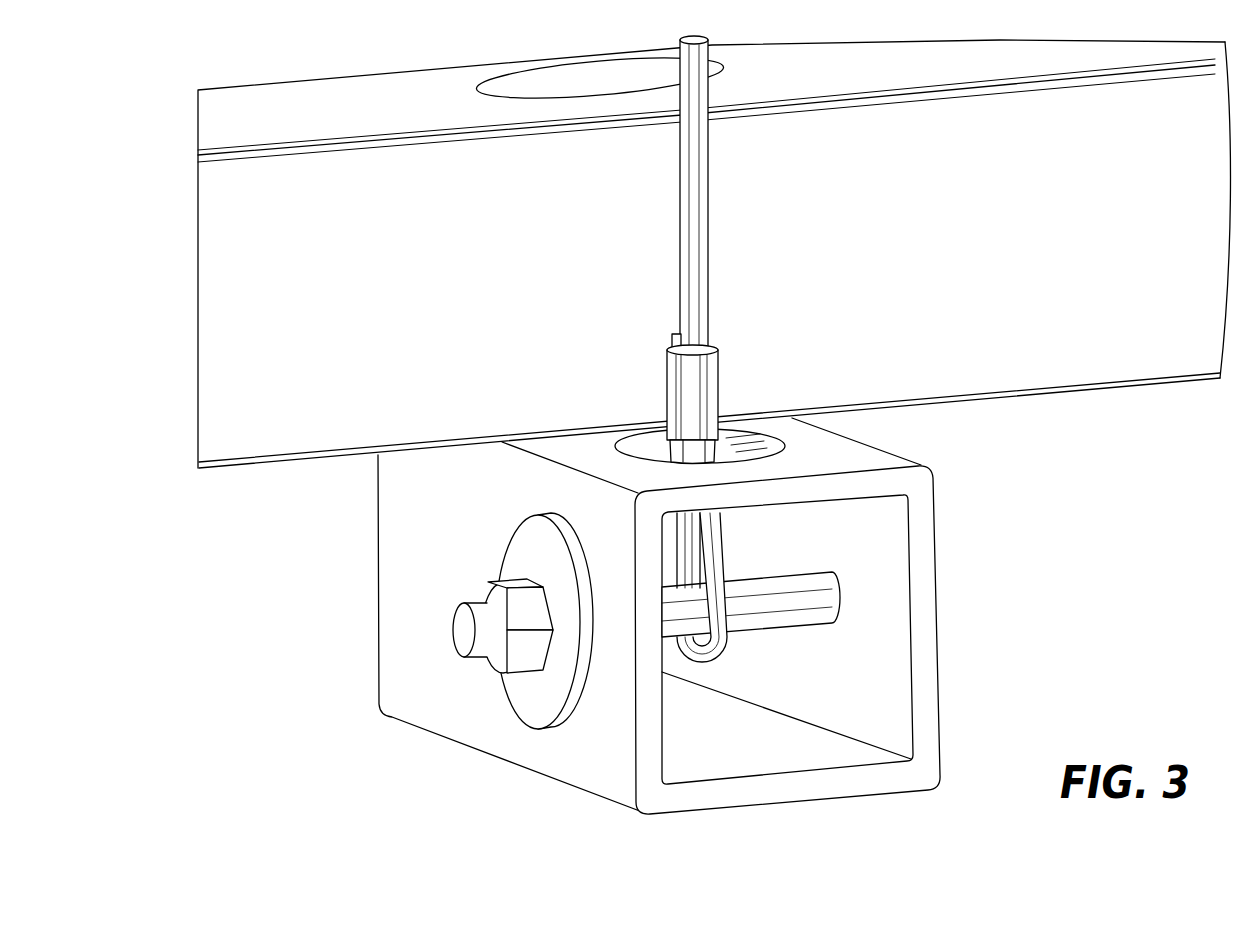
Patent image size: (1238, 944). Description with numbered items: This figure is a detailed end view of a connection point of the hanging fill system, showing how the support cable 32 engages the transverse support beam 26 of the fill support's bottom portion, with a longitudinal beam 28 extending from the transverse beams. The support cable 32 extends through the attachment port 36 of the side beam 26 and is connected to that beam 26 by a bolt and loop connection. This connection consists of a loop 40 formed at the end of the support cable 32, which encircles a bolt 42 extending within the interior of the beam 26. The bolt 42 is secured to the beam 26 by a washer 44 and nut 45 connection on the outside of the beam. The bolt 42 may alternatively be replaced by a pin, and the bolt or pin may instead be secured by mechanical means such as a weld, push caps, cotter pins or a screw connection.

The transverse support beam 26 is at (937, 560).
The longitudinal beam 28 is at (1065, 241).
The support cable 32 is at (708, 220).
The attachment port 36 is at (762, 430).
The loop 40 is at (726, 541).
The bolt 42 is at (839, 607).
The washer 44 is at (508, 697).
The nut 45 is at (540, 619).